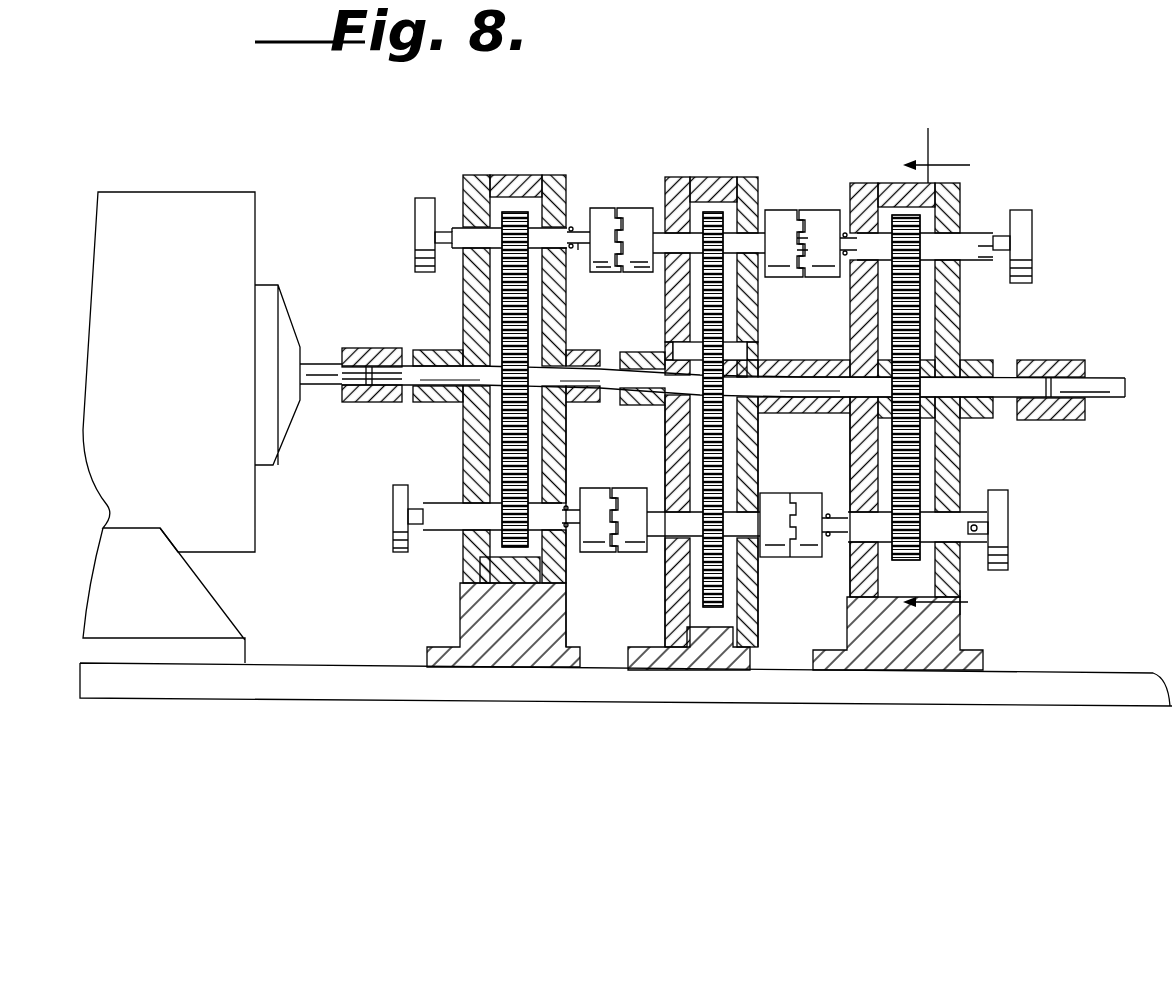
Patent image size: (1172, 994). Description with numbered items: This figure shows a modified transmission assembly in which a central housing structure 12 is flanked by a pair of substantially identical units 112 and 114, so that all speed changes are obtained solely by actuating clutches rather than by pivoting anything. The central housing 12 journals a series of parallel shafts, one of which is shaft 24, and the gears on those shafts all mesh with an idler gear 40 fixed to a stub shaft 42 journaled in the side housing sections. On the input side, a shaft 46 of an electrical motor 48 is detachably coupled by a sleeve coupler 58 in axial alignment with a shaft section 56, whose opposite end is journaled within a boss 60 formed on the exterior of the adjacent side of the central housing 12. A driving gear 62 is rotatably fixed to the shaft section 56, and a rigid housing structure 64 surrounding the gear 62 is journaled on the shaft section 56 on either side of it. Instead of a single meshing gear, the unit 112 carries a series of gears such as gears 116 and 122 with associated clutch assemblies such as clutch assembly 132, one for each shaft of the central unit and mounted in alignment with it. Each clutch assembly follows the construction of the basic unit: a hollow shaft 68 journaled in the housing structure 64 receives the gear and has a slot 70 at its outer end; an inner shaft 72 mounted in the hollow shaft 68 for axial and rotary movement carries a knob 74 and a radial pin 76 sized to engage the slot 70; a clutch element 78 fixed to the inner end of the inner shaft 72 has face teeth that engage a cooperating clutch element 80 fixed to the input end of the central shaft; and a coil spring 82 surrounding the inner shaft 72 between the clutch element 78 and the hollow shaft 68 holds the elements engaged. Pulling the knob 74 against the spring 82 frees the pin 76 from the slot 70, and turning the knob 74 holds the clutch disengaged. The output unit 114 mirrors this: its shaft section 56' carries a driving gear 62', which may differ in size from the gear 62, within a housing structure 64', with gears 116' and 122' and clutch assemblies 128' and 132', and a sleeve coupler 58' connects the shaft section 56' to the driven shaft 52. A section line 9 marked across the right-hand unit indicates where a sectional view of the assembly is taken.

The electrical motor 48 is at (240, 262).
The motor shaft 46 is at (320, 385).
The sleeve coupler 58 is at (365, 355).
The shaft section 56 is at (428, 355).
The unit 112 is at (470, 180).
The gear 116 is at (539, 161).
The housing structure 64 is at (530, 415).
The gear 122 is at (480, 607).
The central housing structure 12 is at (727, 180).
The idler gear 40 is at (712, 305).
The stub shaft 42 is at (728, 353).
The unit 114 is at (905, 148).
The gear 116' is at (962, 191).
The housing structure 64' is at (937, 428).
The shaft section 56' is at (945, 371).
The gear 122' is at (944, 616).
The sleeve coupler 58' is at (1051, 372).
The driven shaft 52 is at (1090, 405).
The slot 70 is at (430, 235).
The hollow shaft 68 is at (450, 230).
The pin 76 is at (450, 258).
The knob 74 is at (410, 273).
The clutch assembly 128' is at (732, 224).
The coil spring 82 is at (587, 228).
The inner shaft 72 is at (578, 252).
The clutch element 78 is at (605, 208).
The cooperating clutch element 80 is at (630, 208).
The clutch assembly 132 is at (363, 520).
The clutch assembly 132' is at (1051, 530).
The driving gear 62 is at (557, 379).
The driving gear 62' is at (961, 387).
The boss 60 is at (638, 352).
The shaft 24 is at (804, 530).
The section line 9- 9 is at (948, 379).